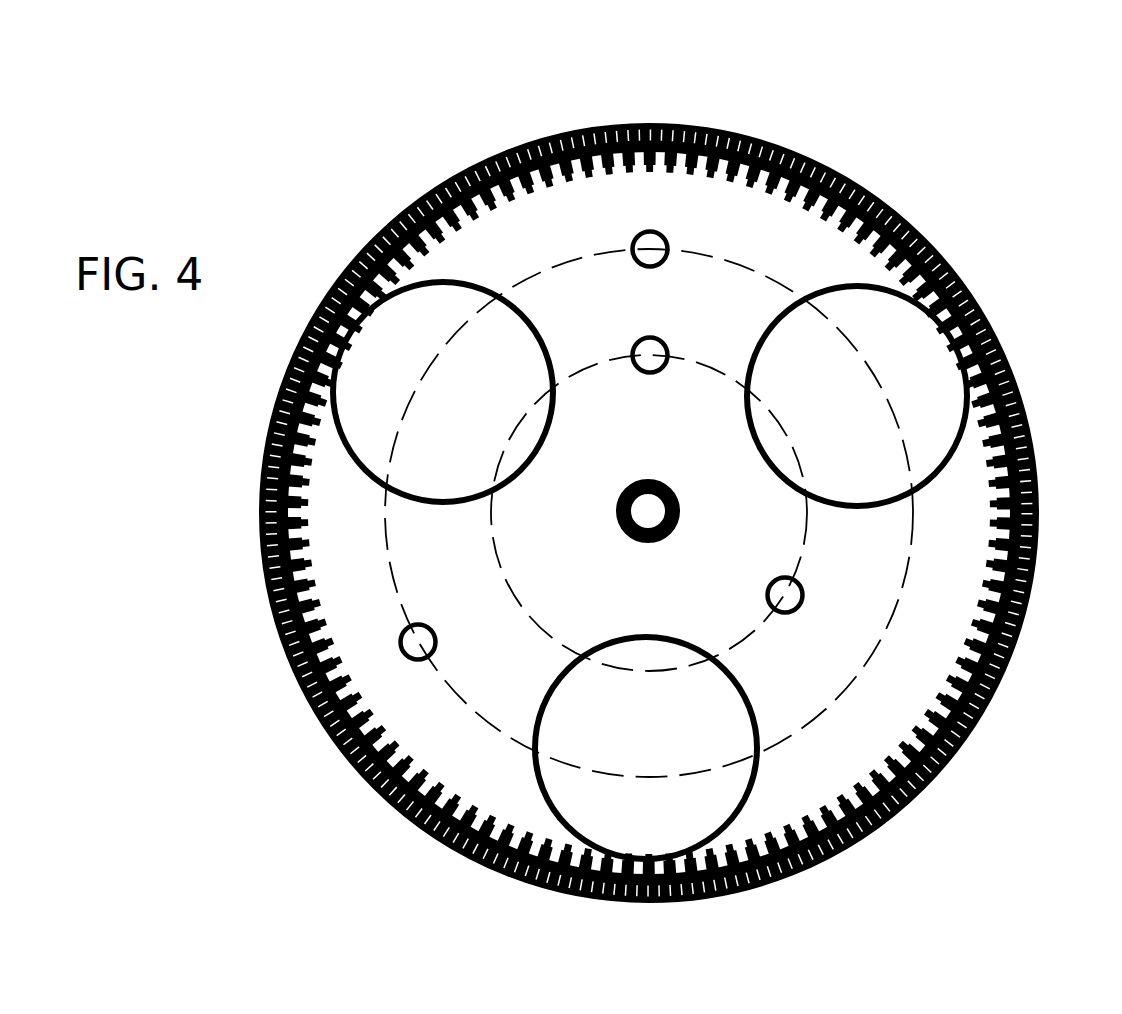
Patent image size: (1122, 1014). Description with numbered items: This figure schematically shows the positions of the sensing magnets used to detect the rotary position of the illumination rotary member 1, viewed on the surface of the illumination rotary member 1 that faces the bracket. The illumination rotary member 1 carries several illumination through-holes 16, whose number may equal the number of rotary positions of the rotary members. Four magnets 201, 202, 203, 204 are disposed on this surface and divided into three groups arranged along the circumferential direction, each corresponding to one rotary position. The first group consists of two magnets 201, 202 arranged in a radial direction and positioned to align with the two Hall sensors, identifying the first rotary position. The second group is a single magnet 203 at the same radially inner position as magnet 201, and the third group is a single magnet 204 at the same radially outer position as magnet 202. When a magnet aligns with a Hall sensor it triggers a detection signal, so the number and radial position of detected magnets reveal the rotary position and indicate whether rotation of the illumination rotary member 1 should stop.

The illumination rotary member 1 is at (862, 745).
The illumination through-hole 16 is at (750, 800).
The magnet 201 is at (647, 348).
The magnet 202 is at (650, 240).
The magnet 203 is at (780, 588).
The magnet 204 is at (412, 648).